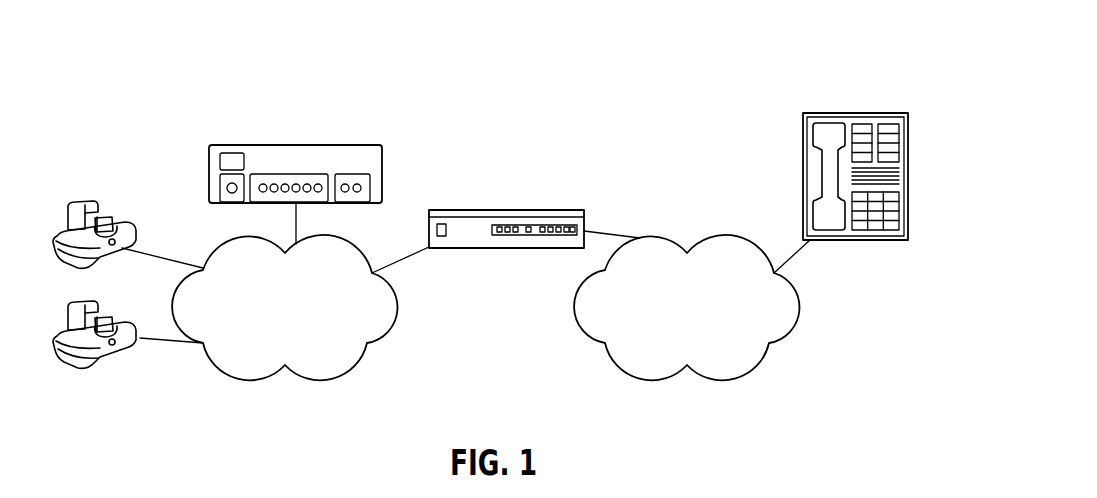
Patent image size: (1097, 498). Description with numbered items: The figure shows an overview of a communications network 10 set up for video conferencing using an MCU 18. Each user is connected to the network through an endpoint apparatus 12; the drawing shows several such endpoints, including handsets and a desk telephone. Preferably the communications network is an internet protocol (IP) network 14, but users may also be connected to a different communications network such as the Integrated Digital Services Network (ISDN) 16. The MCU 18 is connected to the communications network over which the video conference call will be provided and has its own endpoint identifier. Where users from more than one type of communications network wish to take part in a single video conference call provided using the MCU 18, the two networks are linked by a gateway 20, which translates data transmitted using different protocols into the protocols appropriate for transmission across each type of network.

The communications network 10 is at (654, 70).
The endpoint apparatus 12 is at (815, 113).
The internet protocol (IP) network 14 is at (340, 360).
The Integrated Digital Services Network (ISDN) 16 is at (743, 360).
The MCU 18 is at (300, 145).
The gateway 20 is at (530, 210).